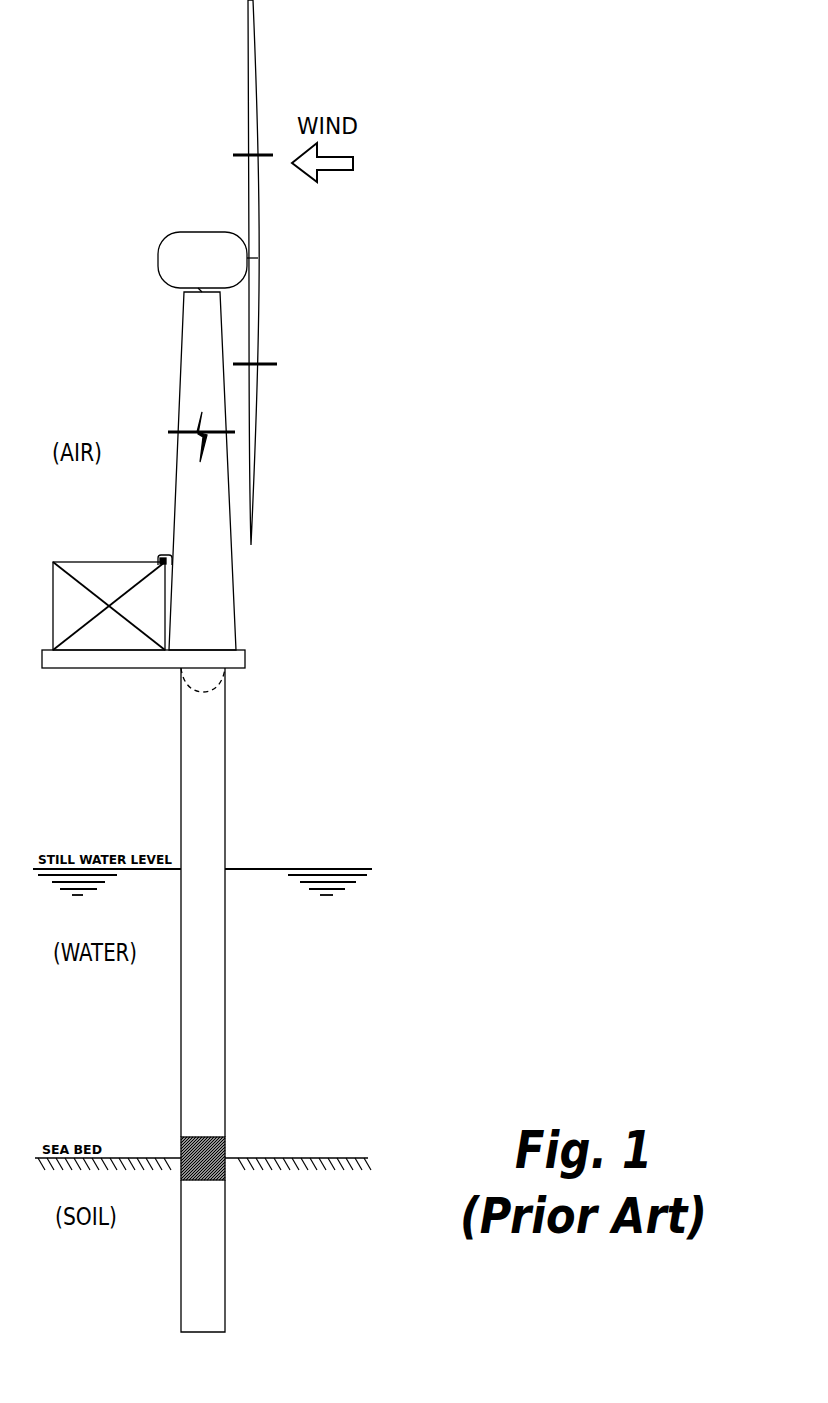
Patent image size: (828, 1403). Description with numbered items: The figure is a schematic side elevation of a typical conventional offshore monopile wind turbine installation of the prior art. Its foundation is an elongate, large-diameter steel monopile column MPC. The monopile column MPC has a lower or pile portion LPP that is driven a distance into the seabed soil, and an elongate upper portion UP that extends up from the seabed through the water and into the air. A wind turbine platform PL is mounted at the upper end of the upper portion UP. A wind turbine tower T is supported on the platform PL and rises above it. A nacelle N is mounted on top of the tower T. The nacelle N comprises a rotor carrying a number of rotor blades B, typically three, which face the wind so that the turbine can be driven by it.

The rotor blade B is at (256, 107).
The nacelle N is at (192, 242).
The wind turbine tower T is at (177, 388).
The wind turbine platform PL is at (247, 660).
The monopile column MPC is at (261, 1000).
The upper portion UP is at (219, 1031).
The lower or pile portion LPP is at (222, 1232).